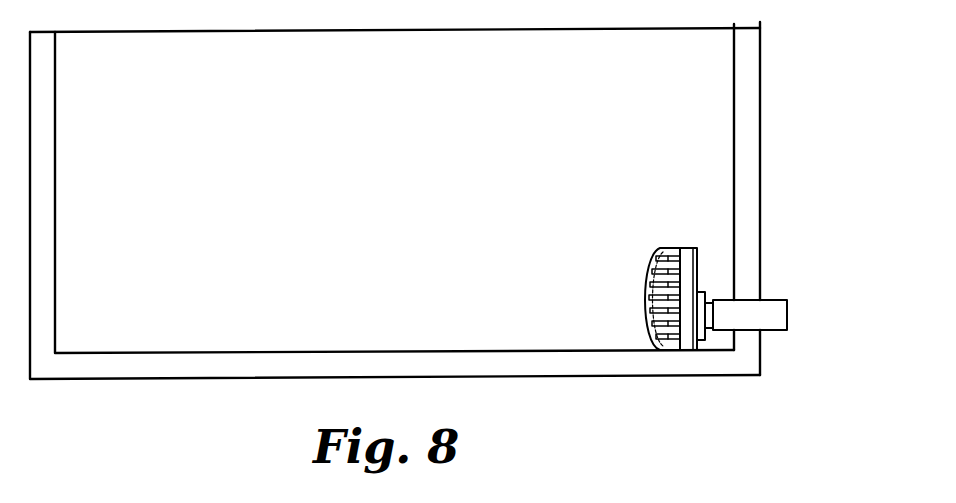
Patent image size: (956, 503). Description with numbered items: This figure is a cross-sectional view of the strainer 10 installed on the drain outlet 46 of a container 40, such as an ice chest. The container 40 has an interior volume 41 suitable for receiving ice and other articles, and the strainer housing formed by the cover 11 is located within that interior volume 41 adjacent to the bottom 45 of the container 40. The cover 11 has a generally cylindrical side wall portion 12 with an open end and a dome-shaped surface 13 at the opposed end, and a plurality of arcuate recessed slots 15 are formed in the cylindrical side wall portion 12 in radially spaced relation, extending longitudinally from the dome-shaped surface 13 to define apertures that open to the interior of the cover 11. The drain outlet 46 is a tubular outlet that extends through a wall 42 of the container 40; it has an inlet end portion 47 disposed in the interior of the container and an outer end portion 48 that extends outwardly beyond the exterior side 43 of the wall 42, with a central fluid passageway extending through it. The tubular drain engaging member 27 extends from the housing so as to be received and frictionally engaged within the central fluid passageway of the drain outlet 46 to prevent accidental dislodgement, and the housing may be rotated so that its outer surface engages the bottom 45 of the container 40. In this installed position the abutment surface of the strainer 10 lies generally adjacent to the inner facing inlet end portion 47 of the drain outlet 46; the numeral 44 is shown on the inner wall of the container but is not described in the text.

The strainer 10 is at (711, 299).
The cover 11 is at (647, 286).
The cylindrical side wall portion 12 is at (683, 248).
The dome-shaped surface 13 is at (645, 311).
The arcuate recessed slots 15 is at (665, 341).
The tubular drain engaging member 27 is at (707, 295).
The container 40 is at (762, 135).
The interior volume 41 is at (368, 208).
The wall 42 is at (757, 168).
The exterior side 43 is at (762, 190).
The inner wall 44 is at (733, 133).
The bottom 45 is at (655, 365).
The drain outlet 46 is at (765, 312).
The inlet end portion 47 is at (723, 335).
The outer end portion 48 is at (787, 325).